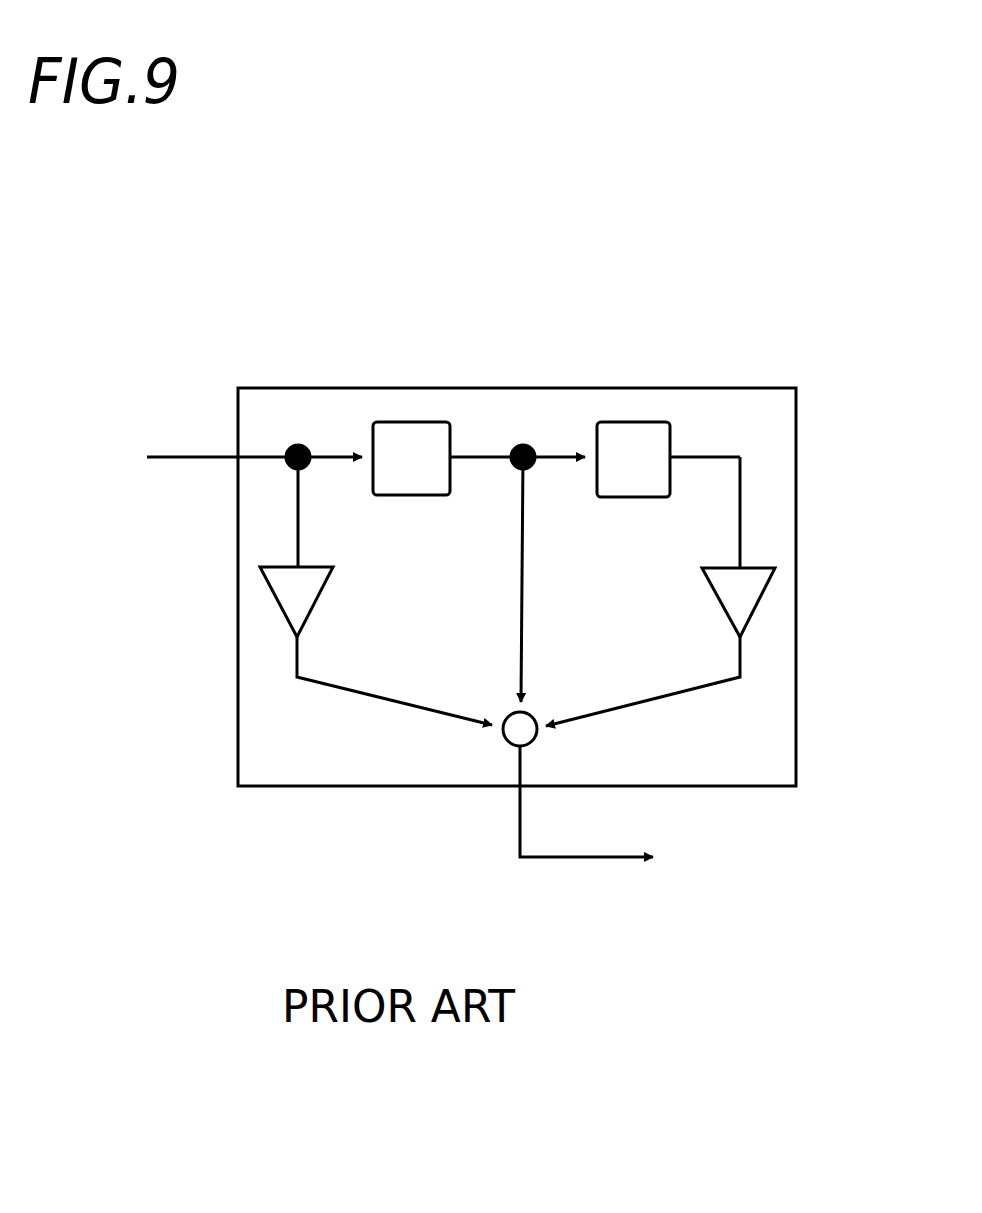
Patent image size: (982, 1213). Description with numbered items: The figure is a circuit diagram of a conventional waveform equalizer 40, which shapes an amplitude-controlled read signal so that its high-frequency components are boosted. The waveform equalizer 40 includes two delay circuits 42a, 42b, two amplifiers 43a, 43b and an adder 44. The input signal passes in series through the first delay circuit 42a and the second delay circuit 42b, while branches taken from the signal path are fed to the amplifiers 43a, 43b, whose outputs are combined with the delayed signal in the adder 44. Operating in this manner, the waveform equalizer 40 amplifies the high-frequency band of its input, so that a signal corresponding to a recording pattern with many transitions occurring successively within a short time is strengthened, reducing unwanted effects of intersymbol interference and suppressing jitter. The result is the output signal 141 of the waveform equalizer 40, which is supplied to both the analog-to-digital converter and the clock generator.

The waveform equalizer 40 is at (740, 387).
The delay circuit 42a is at (425, 422).
The delay circuit 42b is at (633, 422).
The amplifier 43a is at (279, 603).
The amplifier 43b is at (757, 605).
The adder 44 is at (505, 748).
The output signal 141 is at (593, 857).